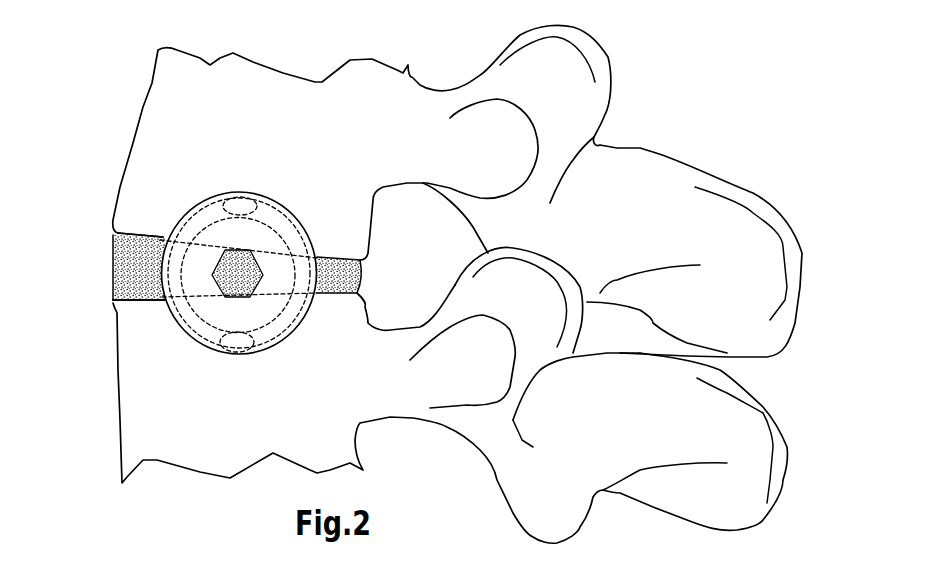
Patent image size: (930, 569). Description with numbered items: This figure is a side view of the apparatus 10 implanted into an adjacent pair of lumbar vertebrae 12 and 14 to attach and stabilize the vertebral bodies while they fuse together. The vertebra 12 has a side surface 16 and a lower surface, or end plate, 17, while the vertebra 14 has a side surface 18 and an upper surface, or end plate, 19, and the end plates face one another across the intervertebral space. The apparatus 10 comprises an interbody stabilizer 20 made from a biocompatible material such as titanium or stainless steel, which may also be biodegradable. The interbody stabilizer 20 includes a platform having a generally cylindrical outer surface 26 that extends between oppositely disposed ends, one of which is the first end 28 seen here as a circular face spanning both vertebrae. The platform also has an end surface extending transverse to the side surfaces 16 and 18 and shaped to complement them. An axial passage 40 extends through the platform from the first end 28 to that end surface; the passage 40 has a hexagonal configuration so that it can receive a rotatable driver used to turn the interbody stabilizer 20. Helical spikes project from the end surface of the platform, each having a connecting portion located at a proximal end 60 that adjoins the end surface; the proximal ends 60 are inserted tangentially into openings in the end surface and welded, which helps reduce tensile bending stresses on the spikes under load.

The apparatus 10 is at (82, 268).
The vertebra 12 is at (141, 98).
The vertebra 14 is at (111, 433).
The side surface 16 is at (157, 163).
The lower surface (end plate) 17 is at (113, 243).
The side surface 18 is at (150, 365).
The upper surface (end plate) 19 is at (117, 293).
The interbody stabilizer 20 is at (262, 288).
The cylindrical outer surface 26 is at (217, 353).
The first end 28 is at (293, 317).
The axial passage 40 is at (250, 297).
The proximal end 60 is at (360, 278).